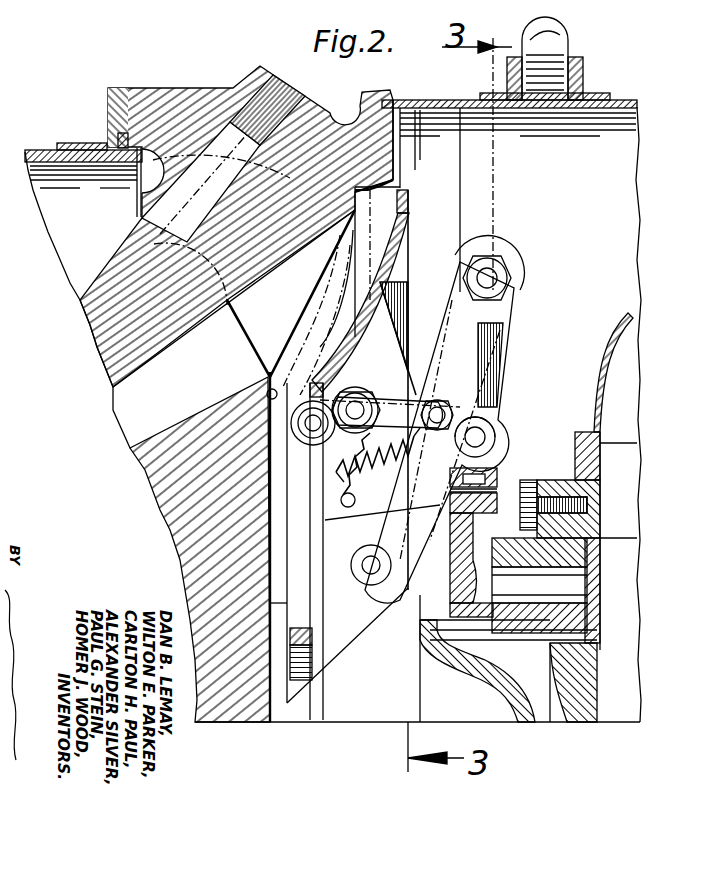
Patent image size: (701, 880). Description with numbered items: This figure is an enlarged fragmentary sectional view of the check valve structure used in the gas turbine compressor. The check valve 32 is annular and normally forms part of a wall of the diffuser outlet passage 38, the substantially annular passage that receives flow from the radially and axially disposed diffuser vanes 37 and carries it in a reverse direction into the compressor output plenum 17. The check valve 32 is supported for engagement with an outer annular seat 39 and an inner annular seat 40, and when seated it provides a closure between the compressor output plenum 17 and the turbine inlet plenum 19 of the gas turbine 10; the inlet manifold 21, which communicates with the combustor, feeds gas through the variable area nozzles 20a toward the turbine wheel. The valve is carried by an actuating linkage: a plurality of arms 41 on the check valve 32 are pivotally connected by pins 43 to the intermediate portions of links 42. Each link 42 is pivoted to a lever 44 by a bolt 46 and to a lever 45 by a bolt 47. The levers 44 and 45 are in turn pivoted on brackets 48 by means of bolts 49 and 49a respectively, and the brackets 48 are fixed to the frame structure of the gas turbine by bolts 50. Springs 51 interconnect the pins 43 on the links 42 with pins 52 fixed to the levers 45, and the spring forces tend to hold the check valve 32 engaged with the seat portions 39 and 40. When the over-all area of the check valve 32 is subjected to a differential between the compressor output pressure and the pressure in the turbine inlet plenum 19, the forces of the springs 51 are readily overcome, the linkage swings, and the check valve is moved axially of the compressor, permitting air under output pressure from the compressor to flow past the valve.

The gas turbine 10 is at (612, 676).
The compressor output plenum 17 is at (50, 168).
The turbine inlet plenum 19 is at (613, 118).
The variable area nozzles 20a is at (630, 555).
The inlet manifold 21 is at (626, 337).
The check valve 32 is at (438, 236).
The diffuser vanes 37 is at (128, 430).
The diffuser outlet passage 38 is at (286, 331).
The outer annular seat 39 is at (368, 186).
The inner annular seat 40 is at (268, 396).
The arms 41 is at (390, 338).
The links 42 is at (407, 400).
The pins 43 is at (437, 407).
The lever 44 is at (505, 340).
The lever 45 is at (307, 462).
The bolt 46 is at (482, 420).
The bolt 47 is at (357, 400).
The brackets 48 is at (483, 368).
The bolt 49 is at (497, 278).
The bolt 49a is at (362, 566).
The bolts 50 is at (304, 632).
The springs 51 is at (365, 492).
The pins 52 is at (378, 512).